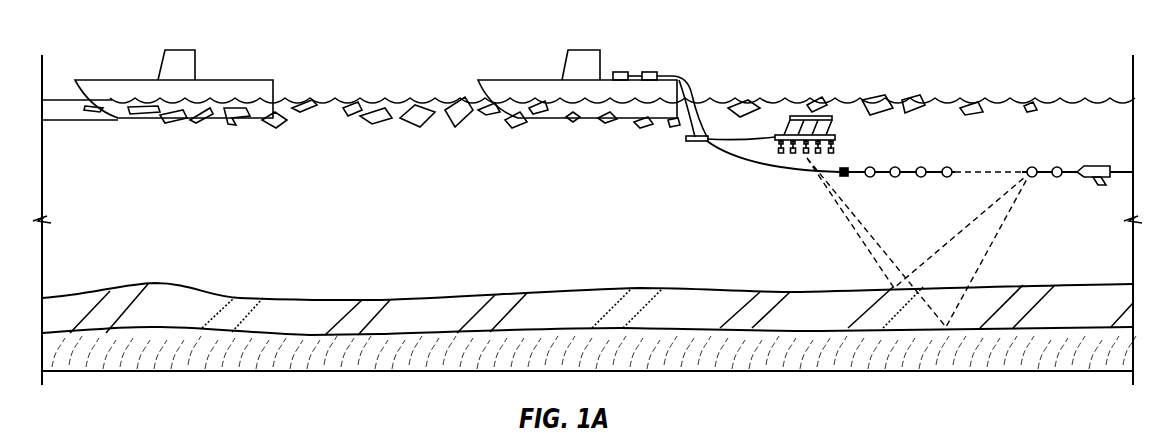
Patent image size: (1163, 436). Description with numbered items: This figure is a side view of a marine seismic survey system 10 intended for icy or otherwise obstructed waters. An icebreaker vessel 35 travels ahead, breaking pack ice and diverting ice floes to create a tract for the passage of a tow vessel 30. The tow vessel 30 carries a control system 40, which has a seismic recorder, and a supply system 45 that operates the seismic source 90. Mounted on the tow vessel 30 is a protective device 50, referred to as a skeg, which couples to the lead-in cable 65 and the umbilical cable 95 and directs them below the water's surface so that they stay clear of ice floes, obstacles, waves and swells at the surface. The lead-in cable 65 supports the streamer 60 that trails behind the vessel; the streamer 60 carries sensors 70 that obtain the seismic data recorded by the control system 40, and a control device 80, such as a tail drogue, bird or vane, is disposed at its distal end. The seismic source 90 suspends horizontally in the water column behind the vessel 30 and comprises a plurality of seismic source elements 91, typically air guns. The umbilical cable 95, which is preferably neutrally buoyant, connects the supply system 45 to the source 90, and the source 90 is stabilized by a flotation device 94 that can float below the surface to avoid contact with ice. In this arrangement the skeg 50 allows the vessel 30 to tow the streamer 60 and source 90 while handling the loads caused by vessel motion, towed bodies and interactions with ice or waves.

The marine seismic survey system 10 is at (1008, 57).
The tow vessel 30 is at (518, 79).
The icebreaker vessel 35 is at (254, 80).
The control system 40 is at (619, 72).
The supply system 45 is at (651, 72).
The protective device 50 is at (696, 88).
The streamer 60 is at (856, 176).
The lead-in cable 65 is at (760, 163).
The sensor 70 is at (922, 167).
The control device 80 is at (1103, 166).
The seismic source 90 is at (852, 124).
The seismic source element 91 is at (840, 147).
The flotation device 94 is at (833, 116).
The umbilical cable 95 is at (765, 138).